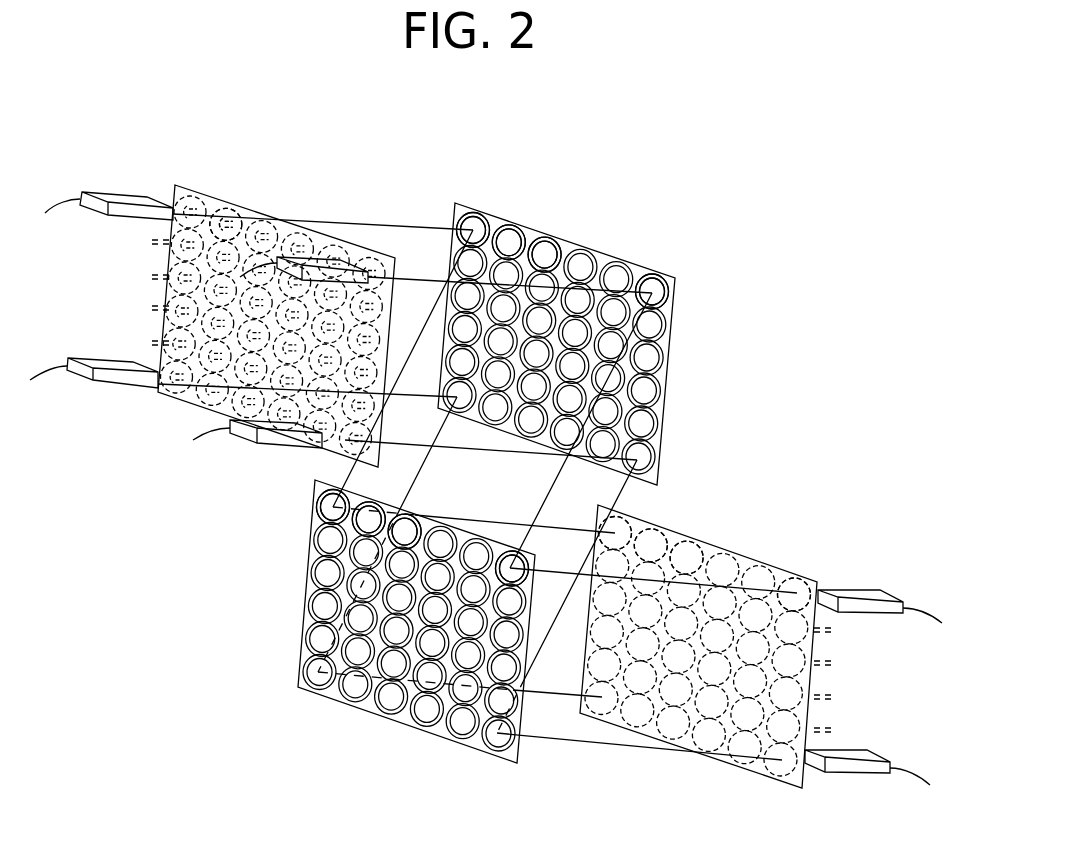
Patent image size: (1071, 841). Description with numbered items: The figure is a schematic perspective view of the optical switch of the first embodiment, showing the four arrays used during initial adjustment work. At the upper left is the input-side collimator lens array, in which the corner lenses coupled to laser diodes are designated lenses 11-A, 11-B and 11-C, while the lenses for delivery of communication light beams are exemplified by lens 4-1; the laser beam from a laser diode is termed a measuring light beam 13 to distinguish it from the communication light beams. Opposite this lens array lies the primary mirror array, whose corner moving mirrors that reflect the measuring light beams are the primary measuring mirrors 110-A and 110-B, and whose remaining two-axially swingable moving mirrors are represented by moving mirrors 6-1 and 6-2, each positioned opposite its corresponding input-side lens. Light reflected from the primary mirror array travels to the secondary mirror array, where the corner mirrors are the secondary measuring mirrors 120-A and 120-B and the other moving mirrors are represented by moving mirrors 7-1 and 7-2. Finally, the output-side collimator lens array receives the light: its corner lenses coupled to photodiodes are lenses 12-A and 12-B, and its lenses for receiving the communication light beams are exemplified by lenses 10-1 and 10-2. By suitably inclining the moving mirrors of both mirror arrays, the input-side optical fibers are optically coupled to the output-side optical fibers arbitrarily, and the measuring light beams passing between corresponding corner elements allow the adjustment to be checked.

The measuring light beam 13 is at (320, 220).
The lens for delivery of communication light beam 4-1 is at (240, 213).
The lens coupled to laser diode 11-A is at (197, 192).
The lens coupled to laser diode 11-B is at (377, 255).
The lens coupled to laser diode 11-C is at (193, 400).
The primary measuring mirror 110-A is at (473, 228).
The moving mirror 6-1 is at (510, 240).
The moving mirror 6-2 is at (545, 250).
The primary measuring mirror 110-B is at (652, 293).
The secondary measuring mirror 120-A is at (337, 505).
The moving mirror 7-1 is at (370, 517).
The moving mirror 7-2 is at (405, 530).
The secondary measuring mirror 120-B is at (510, 568).
The lens coupled to photodiode 12-A is at (620, 523).
The lens for receiving communication light beam 10-1 is at (655, 540).
The lens for receiving communication light beam 10-2 is at (690, 550).
The lens coupled to photodiode 12-B is at (797, 587).